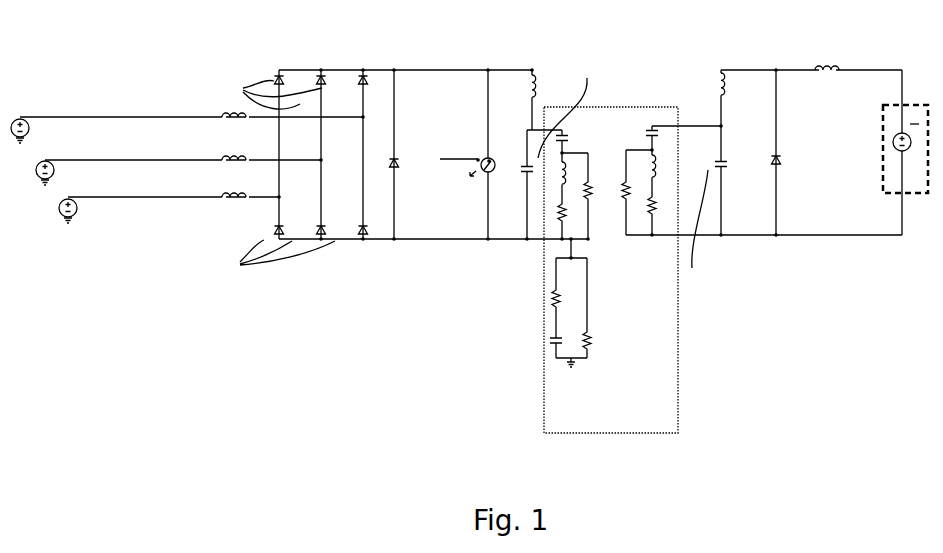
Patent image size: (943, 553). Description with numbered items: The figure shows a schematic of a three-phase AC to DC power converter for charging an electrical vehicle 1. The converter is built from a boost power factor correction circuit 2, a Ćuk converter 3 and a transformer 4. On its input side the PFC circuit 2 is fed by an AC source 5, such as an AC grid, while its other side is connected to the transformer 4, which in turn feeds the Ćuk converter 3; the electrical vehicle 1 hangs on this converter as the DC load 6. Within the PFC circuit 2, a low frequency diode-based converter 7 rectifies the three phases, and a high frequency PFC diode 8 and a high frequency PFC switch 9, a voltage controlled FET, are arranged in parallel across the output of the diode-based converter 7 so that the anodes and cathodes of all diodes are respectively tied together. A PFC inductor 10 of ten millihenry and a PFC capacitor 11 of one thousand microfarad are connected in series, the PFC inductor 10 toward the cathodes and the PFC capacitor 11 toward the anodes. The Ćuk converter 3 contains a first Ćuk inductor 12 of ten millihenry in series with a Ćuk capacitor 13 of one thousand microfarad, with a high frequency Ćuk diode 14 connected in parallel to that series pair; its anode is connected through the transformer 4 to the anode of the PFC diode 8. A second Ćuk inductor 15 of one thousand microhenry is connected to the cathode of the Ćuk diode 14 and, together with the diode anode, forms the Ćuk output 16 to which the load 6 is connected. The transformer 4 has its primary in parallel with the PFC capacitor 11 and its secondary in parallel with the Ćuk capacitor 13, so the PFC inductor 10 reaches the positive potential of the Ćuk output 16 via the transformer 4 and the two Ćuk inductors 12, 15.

The electrical vehicle 1 is at (905, 439).
The boost power factor correction circuit 2 is at (540, 449).
The Ćuk converter 3 is at (843, 443).
The transformer 4 is at (683, 443).
The AC source 5 is at (252, 446).
The DC load 6 is at (885, 191).
The low frequency diode-based converter 7 is at (372, 252).
The high frequency PFC diode 8 is at (415, 252).
The high frequency PFC switch 9 is at (503, 252).
The PFC inductor 10 is at (533, 72).
The PFC capacitor 11 is at (524, 178).
The first Ćuk inductor 12 is at (721, 70).
The Ćuk capacitor 13 is at (724, 170).
The high frequency Ćuk diode 14 is at (777, 168).
The second Ćuk inductor 15 is at (833, 67).
The Ćuk output 16 is at (846, 75).